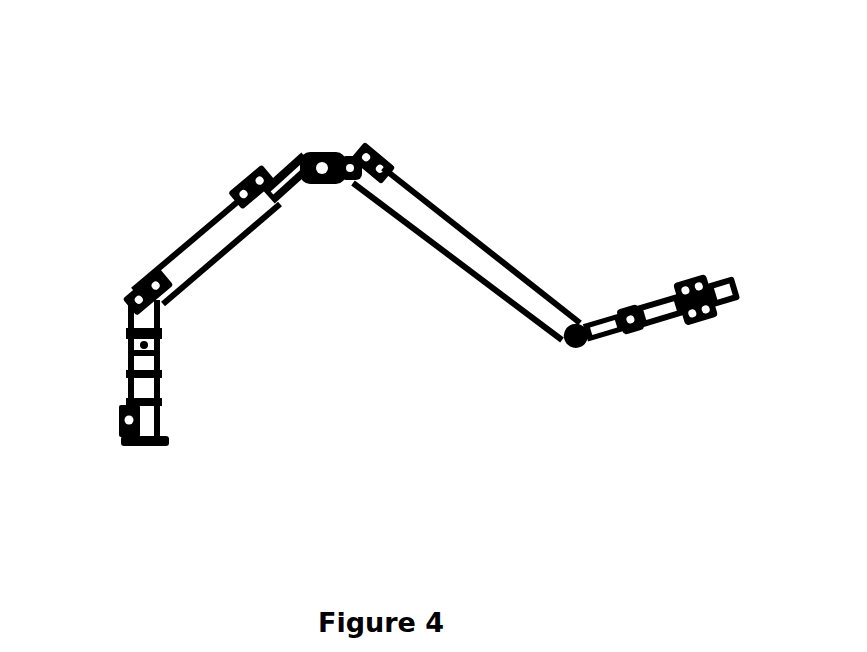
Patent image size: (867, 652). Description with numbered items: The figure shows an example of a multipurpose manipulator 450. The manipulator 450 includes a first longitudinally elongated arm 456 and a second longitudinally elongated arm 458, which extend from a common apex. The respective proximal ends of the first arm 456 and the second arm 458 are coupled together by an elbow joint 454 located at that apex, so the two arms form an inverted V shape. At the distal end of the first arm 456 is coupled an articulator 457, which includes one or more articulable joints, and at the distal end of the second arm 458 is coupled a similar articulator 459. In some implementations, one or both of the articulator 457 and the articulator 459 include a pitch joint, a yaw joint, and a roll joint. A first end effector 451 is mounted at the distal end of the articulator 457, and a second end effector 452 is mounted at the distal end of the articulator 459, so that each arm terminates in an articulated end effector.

The manipulator 450 is at (178, 62).
The first end effector 451 is at (160, 447).
The second end effector 452 is at (733, 290).
The elbow joint 454 is at (313, 150).
The first arm 456 is at (215, 240).
The articulator 457 is at (103, 293).
The second arm 458 is at (475, 255).
The articulator 459 is at (748, 332).